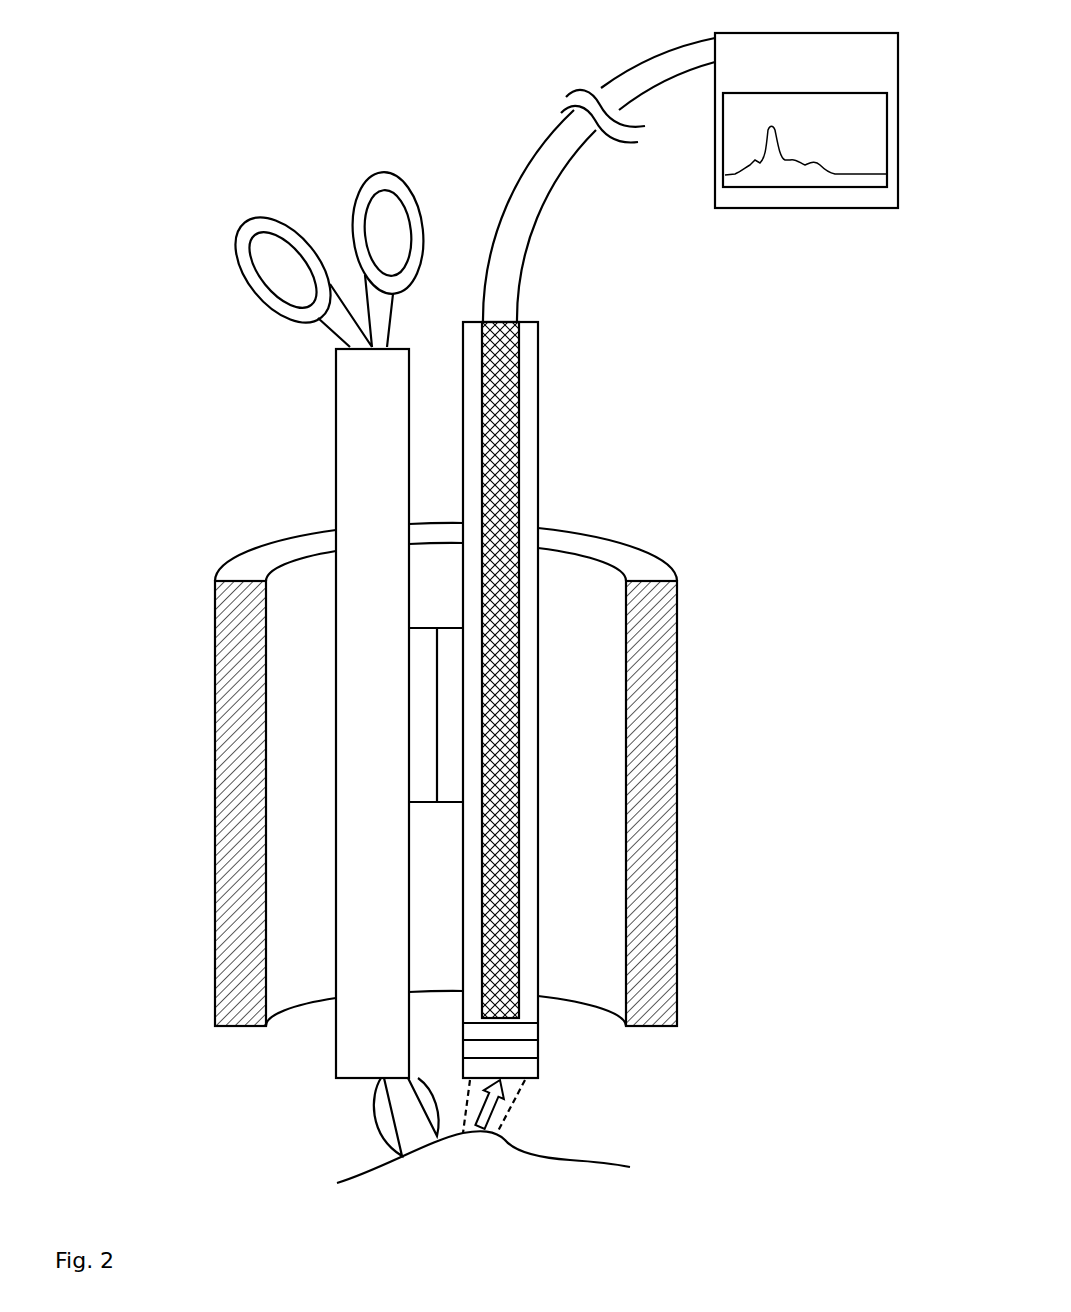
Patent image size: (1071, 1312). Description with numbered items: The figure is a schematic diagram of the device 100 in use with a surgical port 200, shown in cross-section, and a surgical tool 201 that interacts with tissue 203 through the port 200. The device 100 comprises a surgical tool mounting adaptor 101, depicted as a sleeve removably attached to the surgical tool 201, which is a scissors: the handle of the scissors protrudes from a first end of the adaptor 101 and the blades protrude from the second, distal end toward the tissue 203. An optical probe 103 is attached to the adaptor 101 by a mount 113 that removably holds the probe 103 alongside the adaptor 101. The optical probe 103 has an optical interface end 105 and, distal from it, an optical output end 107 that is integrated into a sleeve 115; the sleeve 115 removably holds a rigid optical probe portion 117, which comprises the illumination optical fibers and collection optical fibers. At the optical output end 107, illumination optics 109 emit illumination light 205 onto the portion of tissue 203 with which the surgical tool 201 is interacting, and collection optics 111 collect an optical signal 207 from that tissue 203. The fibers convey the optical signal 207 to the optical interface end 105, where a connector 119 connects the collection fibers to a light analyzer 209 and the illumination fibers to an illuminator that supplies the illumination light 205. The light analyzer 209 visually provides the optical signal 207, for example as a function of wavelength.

The device 100 is at (226, 1103).
The surgical tool mounting adaptor 101 is at (348, 460).
The optical probe 103 is at (546, 885).
The optical interface end 105 is at (528, 318).
The optical output end 107 is at (548, 1086).
The illumination optics 109 is at (525, 1070).
The collection optics 111 is at (475, 1068).
The mount 113 is at (438, 810).
The sleeve 115 is at (525, 737).
The rigid optical probe portion 117 is at (518, 803).
The connector 119 is at (502, 295).
The surgical port 200 is at (248, 563).
The surgical tool 201 is at (245, 236).
The tissue 203 is at (579, 1204).
The illumination light 205 is at (497, 1133).
The optical signal 207 is at (766, 175).
The light analyzer 209 is at (782, 67).